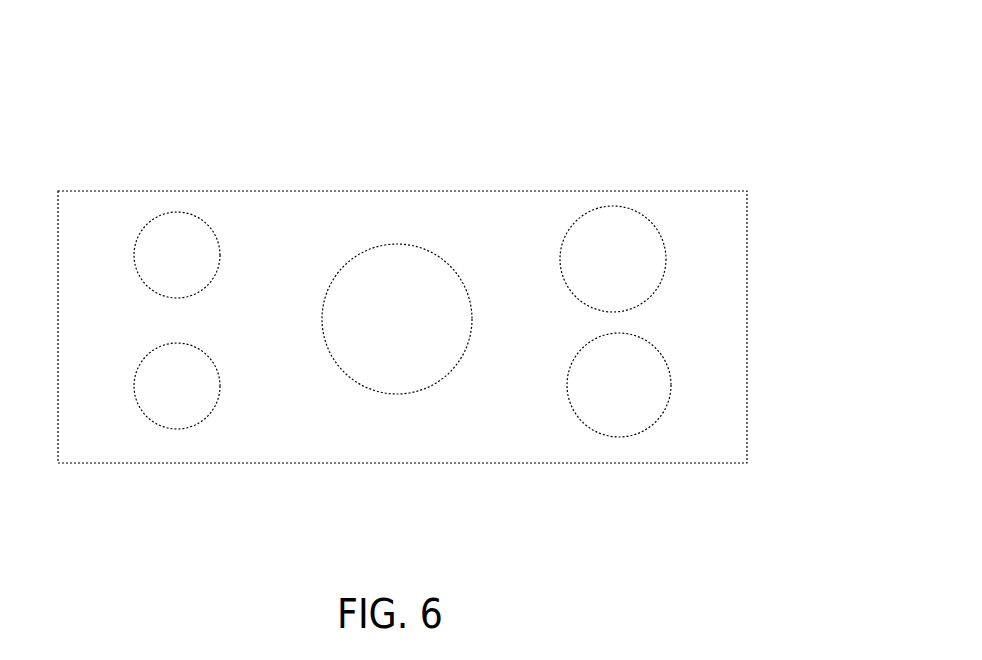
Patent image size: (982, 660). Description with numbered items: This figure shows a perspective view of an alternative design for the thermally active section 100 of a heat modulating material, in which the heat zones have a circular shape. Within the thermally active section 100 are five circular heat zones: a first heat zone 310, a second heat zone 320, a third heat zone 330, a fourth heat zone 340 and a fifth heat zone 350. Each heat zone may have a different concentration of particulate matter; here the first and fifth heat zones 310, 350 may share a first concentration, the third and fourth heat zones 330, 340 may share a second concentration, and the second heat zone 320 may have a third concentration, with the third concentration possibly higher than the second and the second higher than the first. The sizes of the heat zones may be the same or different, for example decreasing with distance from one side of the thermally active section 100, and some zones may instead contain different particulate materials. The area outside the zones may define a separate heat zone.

The thermally active section 100 is at (402, 249).
The first heat zone 310 is at (227, 211).
The second heat zone 320 is at (401, 267).
The third heat zone 330 is at (667, 216).
The fourth heat zone 340 is at (654, 431).
The fifth heat zone 350 is at (215, 432).